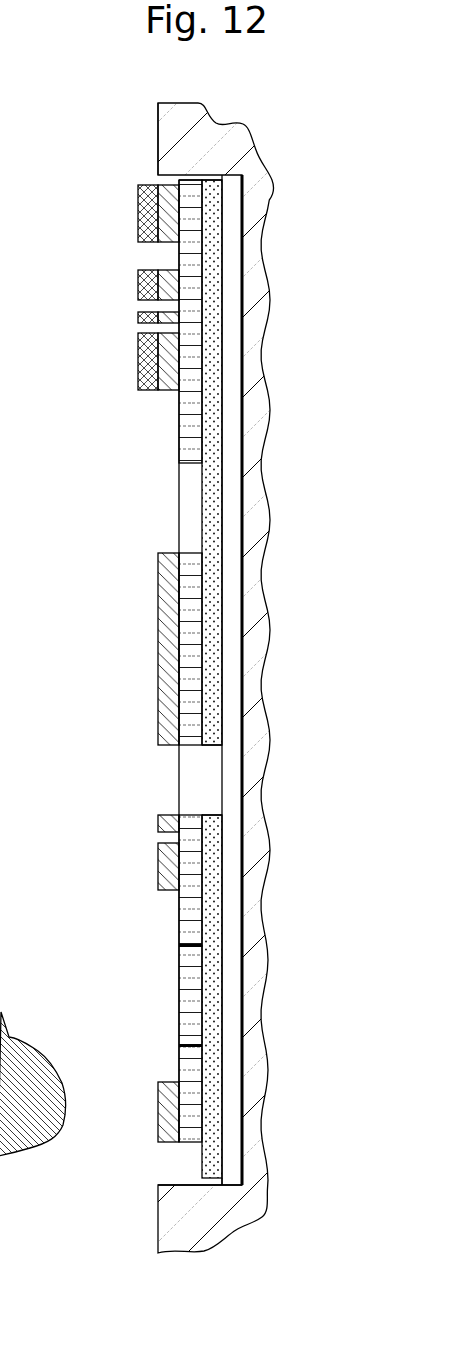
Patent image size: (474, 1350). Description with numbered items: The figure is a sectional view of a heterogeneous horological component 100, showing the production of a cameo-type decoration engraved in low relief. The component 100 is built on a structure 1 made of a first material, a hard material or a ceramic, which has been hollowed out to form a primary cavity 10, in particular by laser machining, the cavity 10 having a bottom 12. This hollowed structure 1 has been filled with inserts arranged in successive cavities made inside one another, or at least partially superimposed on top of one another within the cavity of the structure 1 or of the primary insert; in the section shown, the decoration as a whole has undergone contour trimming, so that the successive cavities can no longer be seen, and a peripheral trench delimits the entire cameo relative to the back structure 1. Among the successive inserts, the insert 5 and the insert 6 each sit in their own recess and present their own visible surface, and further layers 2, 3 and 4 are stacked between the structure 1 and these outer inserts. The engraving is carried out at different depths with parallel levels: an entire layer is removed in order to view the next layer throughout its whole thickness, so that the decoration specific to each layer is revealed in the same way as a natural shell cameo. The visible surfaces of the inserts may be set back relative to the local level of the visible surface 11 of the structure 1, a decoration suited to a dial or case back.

The structure 1 is at (215, 143).
The second layer 2 is at (230, 483).
The third layer 3 is at (210, 430).
The fourth layer 4 is at (192, 228).
The insert 5 is at (170, 214).
The insert 6 is at (150, 192).
The primary cavity 10 is at (185, 1180).
The visible surface 11 is at (144, 128).
The bottom 12 is at (230, 1165).
The heterogeneous horological component 100 is at (92, 198).